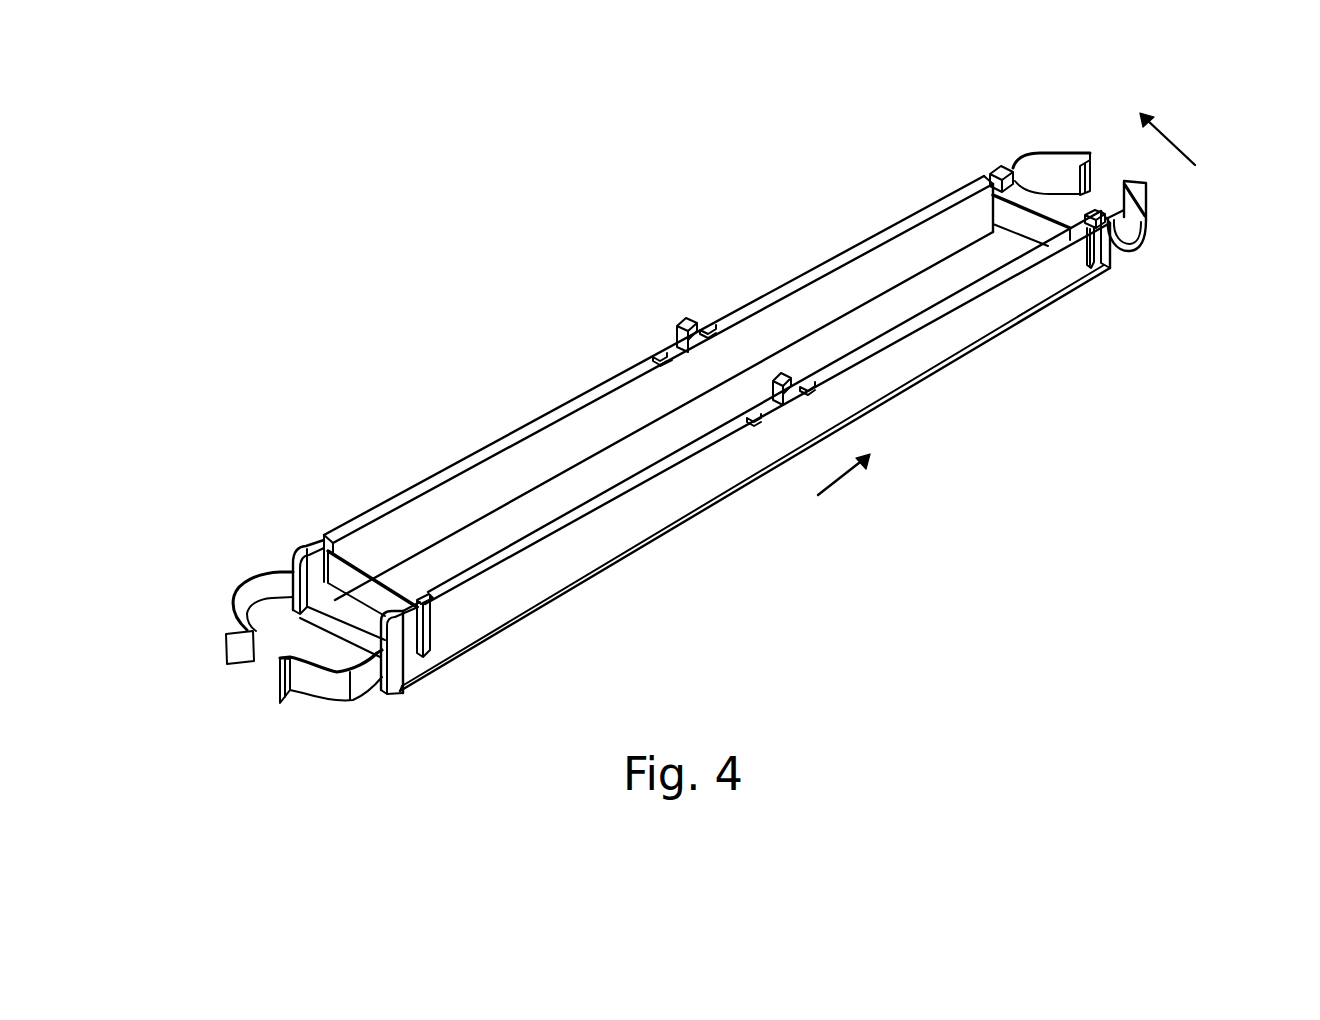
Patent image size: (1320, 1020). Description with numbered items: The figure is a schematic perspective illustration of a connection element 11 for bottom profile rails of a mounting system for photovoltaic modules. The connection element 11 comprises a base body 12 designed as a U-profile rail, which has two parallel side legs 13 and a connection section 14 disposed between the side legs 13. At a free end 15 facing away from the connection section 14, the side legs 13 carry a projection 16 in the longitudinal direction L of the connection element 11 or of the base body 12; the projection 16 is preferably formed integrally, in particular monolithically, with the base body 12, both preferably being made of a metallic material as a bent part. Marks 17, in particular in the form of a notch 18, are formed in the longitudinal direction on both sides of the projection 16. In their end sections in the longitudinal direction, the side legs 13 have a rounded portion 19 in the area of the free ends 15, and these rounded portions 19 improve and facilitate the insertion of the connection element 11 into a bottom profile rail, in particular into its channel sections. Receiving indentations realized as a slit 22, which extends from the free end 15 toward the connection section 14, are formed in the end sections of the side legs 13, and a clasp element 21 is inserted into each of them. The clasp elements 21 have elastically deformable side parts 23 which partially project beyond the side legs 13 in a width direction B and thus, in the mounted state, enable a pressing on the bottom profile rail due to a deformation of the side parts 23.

The connection element 11 is at (708, 230).
The base body 12 is at (572, 596).
The side legs 13 is at (455, 585).
The connection section 14 is at (540, 510).
The free end 15 is at (848, 245).
The projection 16 is at (684, 322).
The marks 17 is at (714, 324).
The notch 18 is at (716, 346).
The rounded portion 19 is at (300, 555).
The clasp element 21 is at (1148, 236).
The slit 22 is at (990, 172).
The side parts 23 is at (238, 580).